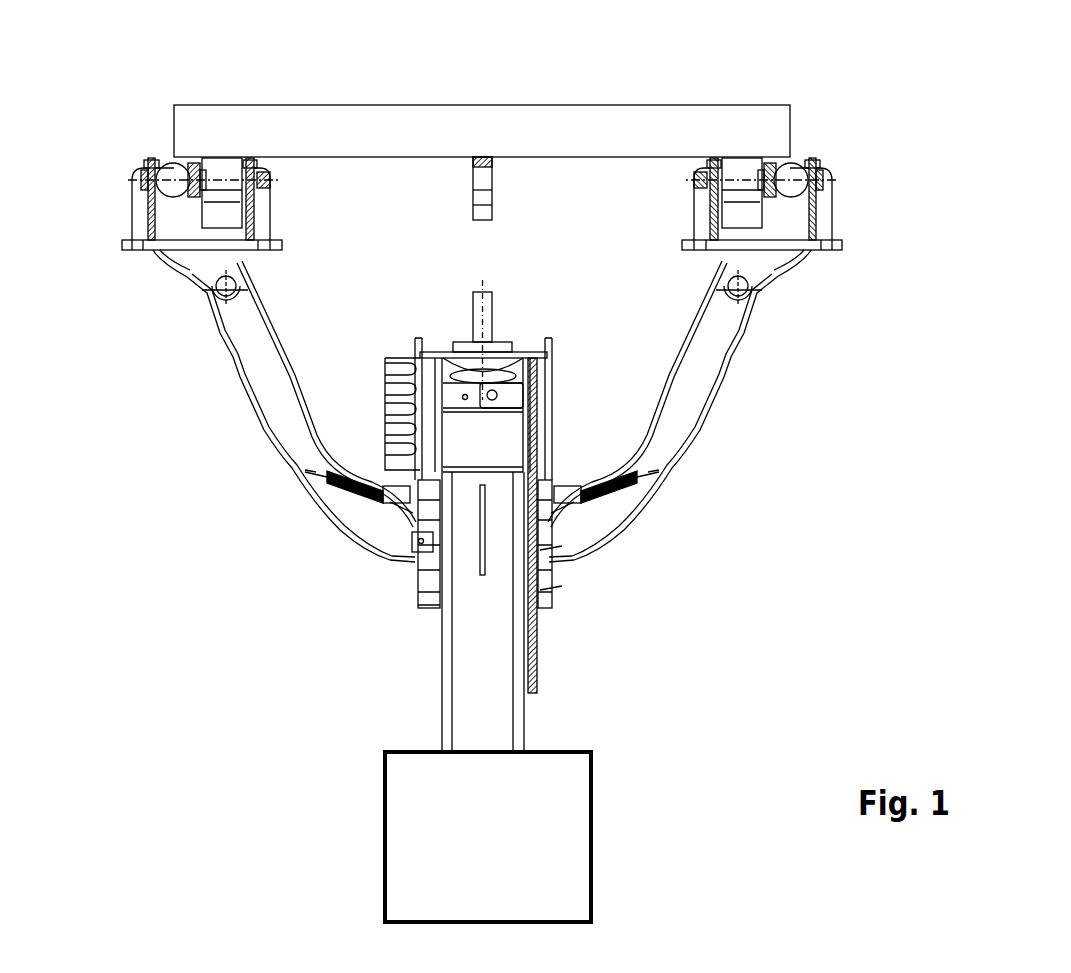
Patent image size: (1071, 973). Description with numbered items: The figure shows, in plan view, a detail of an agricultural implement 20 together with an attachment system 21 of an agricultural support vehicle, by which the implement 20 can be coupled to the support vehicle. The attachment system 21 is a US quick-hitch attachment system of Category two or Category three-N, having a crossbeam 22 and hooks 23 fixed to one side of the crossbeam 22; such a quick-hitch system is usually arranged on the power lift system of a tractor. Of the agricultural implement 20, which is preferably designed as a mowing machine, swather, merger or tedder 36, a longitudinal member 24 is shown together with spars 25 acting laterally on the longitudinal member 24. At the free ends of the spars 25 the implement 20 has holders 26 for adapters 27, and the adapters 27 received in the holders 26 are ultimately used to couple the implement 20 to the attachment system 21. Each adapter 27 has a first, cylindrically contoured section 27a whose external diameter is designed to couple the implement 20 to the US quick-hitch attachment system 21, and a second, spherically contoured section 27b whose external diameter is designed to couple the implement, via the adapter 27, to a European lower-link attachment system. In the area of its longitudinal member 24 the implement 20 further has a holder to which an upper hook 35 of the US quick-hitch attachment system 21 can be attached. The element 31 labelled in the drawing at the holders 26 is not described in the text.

The agricultural implement 20 is at (471, 521).
The attachment system 21 is at (481, 174).
The crossbeam 22 is at (598, 120).
The hooks 23 is at (228, 165).
The longitudinal member 24 is at (498, 725).
The spars 25 is at (253, 357).
The holders 26 is at (481, 185).
The adapter 27 is at (175, 210).
The first, cylindrically contoured section 27a is at (215, 160).
The second, spherically contoured section 27b is at (155, 162).
The mounting post 31 is at (153, 205).
The upper hook 35 is at (492, 197).
The tedder 36 is at (548, 817).